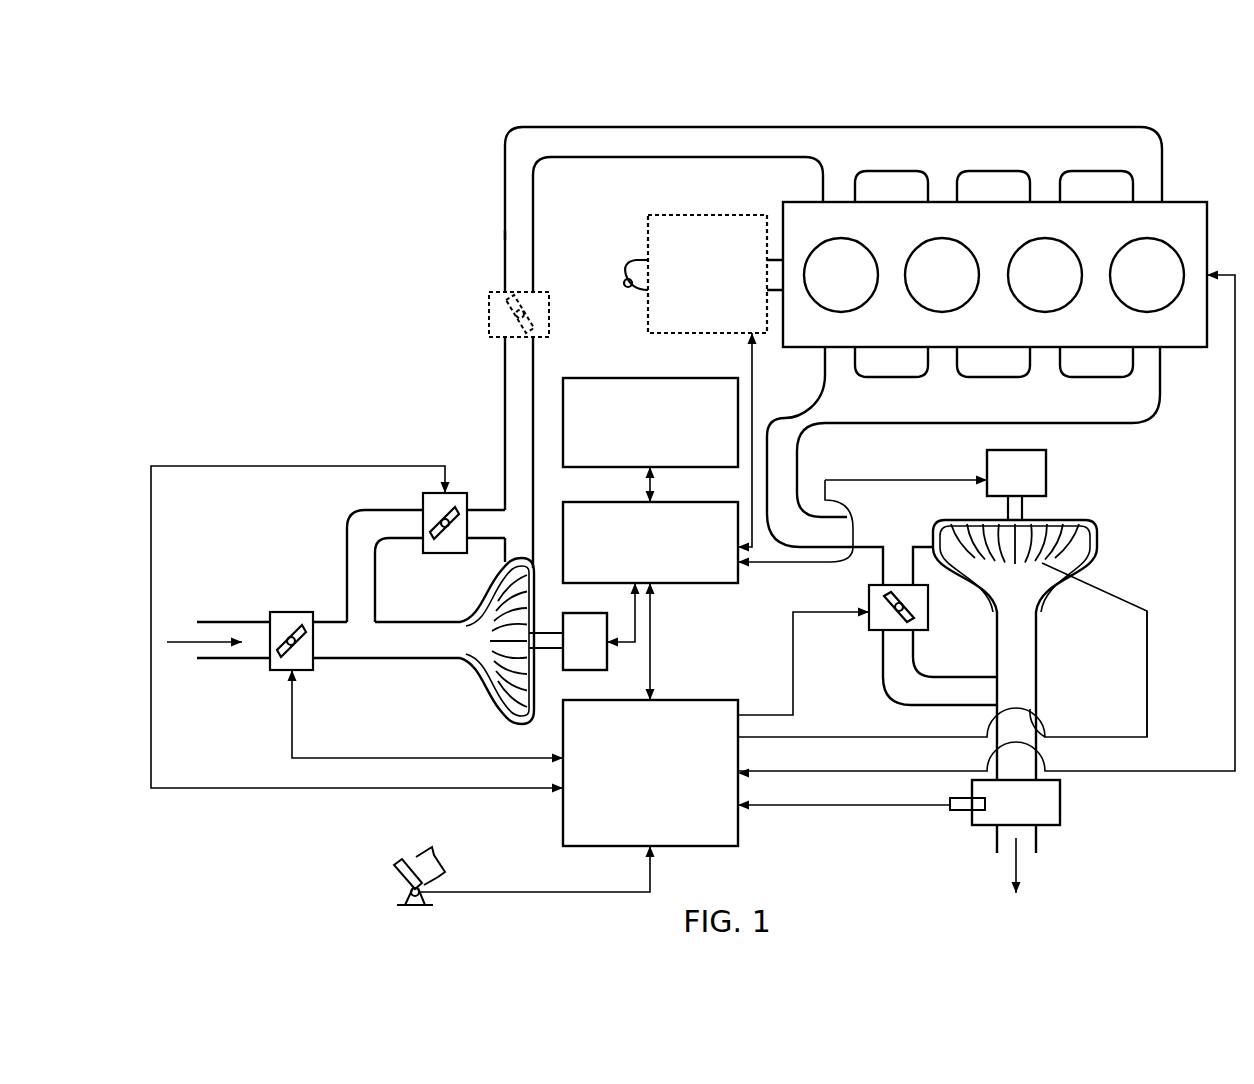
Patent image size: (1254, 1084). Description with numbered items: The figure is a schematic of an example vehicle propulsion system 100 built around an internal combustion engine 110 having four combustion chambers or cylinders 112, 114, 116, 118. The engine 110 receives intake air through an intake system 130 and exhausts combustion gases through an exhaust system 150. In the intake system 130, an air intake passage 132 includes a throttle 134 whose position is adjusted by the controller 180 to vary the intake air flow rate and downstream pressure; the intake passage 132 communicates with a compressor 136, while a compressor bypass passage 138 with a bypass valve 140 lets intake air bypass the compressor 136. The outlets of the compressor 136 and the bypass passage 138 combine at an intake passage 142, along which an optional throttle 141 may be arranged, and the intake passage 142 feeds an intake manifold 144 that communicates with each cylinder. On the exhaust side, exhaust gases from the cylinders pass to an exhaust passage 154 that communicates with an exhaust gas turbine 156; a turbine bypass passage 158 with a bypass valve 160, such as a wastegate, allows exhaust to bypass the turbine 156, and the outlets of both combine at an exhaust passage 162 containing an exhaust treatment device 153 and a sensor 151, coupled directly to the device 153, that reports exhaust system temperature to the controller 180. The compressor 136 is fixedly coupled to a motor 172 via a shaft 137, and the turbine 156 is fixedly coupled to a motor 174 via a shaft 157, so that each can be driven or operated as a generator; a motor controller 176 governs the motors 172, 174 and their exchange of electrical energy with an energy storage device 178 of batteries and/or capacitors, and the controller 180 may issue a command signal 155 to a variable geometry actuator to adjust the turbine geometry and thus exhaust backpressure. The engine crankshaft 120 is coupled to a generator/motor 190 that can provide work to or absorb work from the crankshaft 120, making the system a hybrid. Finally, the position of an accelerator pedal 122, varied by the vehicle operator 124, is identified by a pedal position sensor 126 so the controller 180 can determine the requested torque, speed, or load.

The vehicle propulsion system 100 is at (298, 278).
The internal combustion engine 110 is at (1175, 202).
The cylinder 112 is at (841, 275).
The cylinder 114 is at (942, 275).
The cylinder 116 is at (1045, 275).
The cylinder 118 is at (1147, 275).
The crankshaft 120 is at (637, 262).
The accelerator pedal 122 is at (398, 872).
The vehicle operator 124 is at (440, 860).
The pedal position sensor 126 is at (410, 892).
The intake system 130 is at (435, 695).
The air intake passage 132 is at (240, 622).
The throttle 134 is at (300, 612).
The compressor 136 is at (517, 702).
The shaft 137 is at (543, 648).
The compressor bypass passage 138 is at (350, 535).
The bypass valve 140 is at (462, 493).
The throttle 141 is at (489, 314).
The intake passage 142 is at (506, 222).
The intake manifold 144 is at (1088, 127).
The exhaust system 150 is at (1068, 598).
The sensor 151 is at (963, 812).
The exhaust treatment device 153 is at (1060, 800).
The exhaust passage 154 is at (797, 460).
The command signal 155 is at (1147, 672).
The exhaust gas turbine 156 is at (1062, 548).
The shaft 157 is at (1025, 512).
The turbine bypass passage 158 is at (890, 690).
The bypass valve 160 is at (928, 600).
The exhaust passage 162 is at (1035, 740).
The motor 172 is at (585, 641).
The motor 174 is at (1016, 473).
The motor controller 176 is at (650, 542).
The energy storage device 178 is at (650, 422).
The controller 180 is at (650, 773).
The generator/motor 190 is at (715, 274).